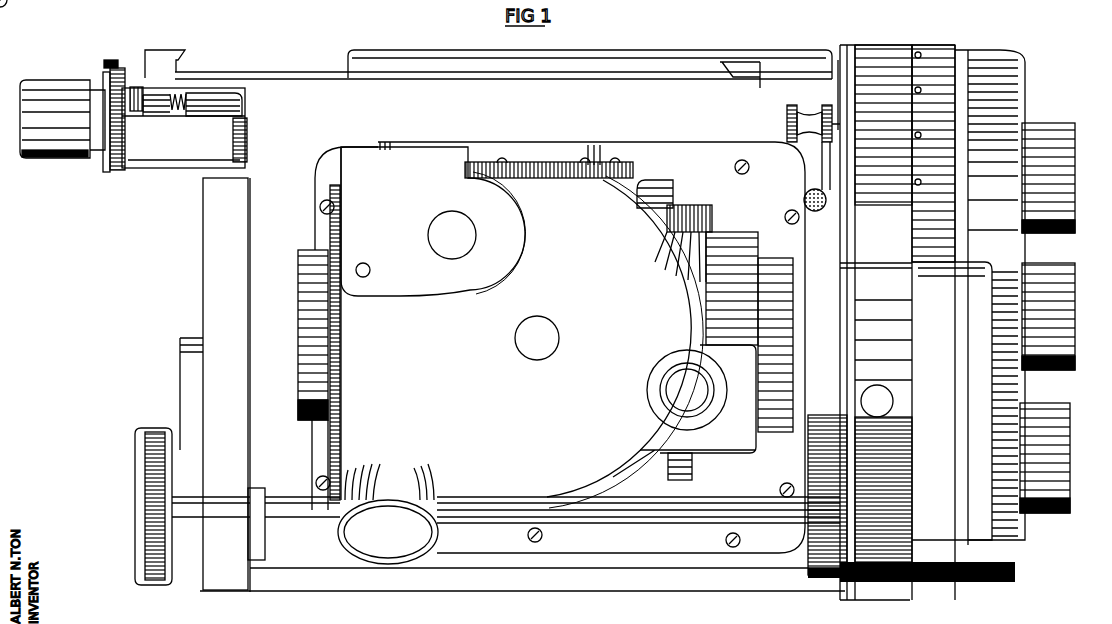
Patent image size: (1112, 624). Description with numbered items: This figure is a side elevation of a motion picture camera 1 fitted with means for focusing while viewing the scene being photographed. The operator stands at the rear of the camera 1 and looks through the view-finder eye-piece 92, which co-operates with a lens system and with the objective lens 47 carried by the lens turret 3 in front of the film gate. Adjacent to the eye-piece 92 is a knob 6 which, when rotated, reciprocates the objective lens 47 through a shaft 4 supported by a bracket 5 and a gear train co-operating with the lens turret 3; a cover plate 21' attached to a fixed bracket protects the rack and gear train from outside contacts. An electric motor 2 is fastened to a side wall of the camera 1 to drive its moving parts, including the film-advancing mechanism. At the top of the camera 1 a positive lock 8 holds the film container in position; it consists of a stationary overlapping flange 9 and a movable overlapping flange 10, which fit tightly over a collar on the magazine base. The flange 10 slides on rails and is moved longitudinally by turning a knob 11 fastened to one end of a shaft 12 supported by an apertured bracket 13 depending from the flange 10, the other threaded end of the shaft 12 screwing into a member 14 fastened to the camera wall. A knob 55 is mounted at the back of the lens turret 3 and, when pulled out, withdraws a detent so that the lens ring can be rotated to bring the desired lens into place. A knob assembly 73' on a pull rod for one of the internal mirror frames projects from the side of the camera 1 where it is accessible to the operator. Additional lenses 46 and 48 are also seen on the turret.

The camera 1 is at (662, 93).
The electric motor 2 is at (362, 160).
The lens turret 3 is at (1000, 60).
The shaft 4 is at (605, 519).
The bracket 5 is at (262, 490).
The knob 6 is at (136, 462).
The positive lock 8 is at (135, 72).
The stationary overlapping flange 9 is at (745, 63).
The movable overlapping flange 10 is at (172, 48).
The knob 11 is at (127, 110).
The shaft 12 is at (181, 112).
The apertured bracket 13 is at (162, 132).
The member 14 is at (216, 118).
The cover plate 21' is at (983, 401).
The roller 46 is at (1074, 178).
The objective lens 47 is at (1074, 312).
The roller 48 is at (1068, 450).
The knob 55 is at (787, 118).
The knob assembly 73' is at (849, 396).
The view-finder eye-piece 92 is at (48, 88).